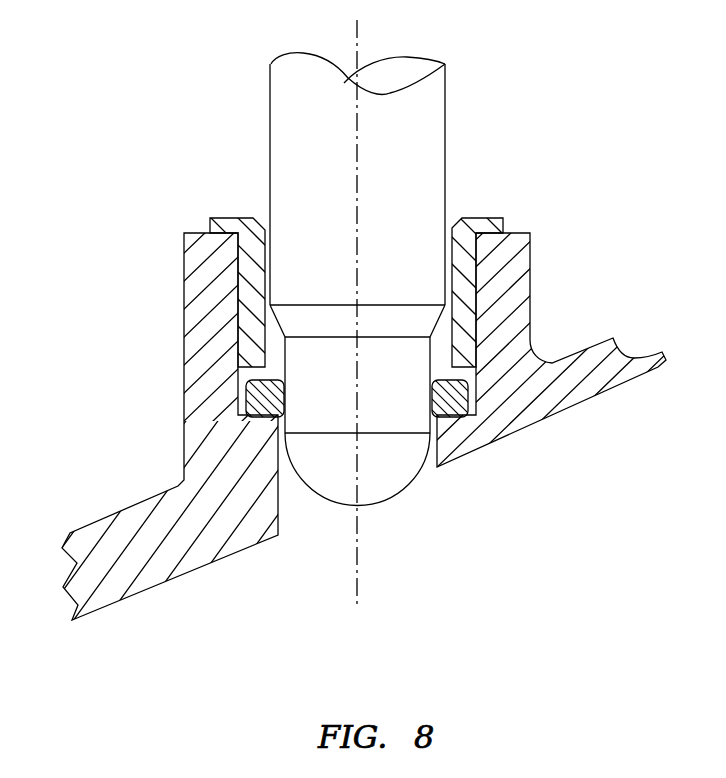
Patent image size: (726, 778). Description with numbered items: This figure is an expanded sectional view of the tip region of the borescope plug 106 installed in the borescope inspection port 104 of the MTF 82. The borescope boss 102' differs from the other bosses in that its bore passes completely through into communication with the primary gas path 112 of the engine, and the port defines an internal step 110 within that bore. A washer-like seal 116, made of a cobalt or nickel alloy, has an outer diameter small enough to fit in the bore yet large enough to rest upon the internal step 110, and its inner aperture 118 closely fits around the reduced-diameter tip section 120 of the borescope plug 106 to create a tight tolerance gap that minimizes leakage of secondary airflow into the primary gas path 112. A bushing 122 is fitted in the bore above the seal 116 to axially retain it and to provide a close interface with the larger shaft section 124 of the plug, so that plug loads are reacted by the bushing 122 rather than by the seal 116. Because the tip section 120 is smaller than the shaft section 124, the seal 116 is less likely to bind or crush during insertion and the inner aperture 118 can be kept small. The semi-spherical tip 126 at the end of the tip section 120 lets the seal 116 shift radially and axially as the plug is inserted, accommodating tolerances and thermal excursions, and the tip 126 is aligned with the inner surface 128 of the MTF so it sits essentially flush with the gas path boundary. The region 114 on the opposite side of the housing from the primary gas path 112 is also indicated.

The MTF 82 is at (617, 356).
The borescope boss 102' is at (468, 317).
The borescope inspection port 104 is at (234, 456).
The borescope plug 106 is at (412, 309).
The internal step 110 is at (491, 441).
The primary gas path 112 is at (451, 631).
The first chamber / side 114 is at (101, 351).
The seal 116 is at (460, 391).
The inner aperture 118 is at (284, 397).
The tip section 120 is at (344, 382).
The bushing 122 is at (481, 224).
The shaft section 124 is at (338, 172).
The semi-spherical tip 126 is at (402, 497).
The inner surface 128 is at (148, 592).